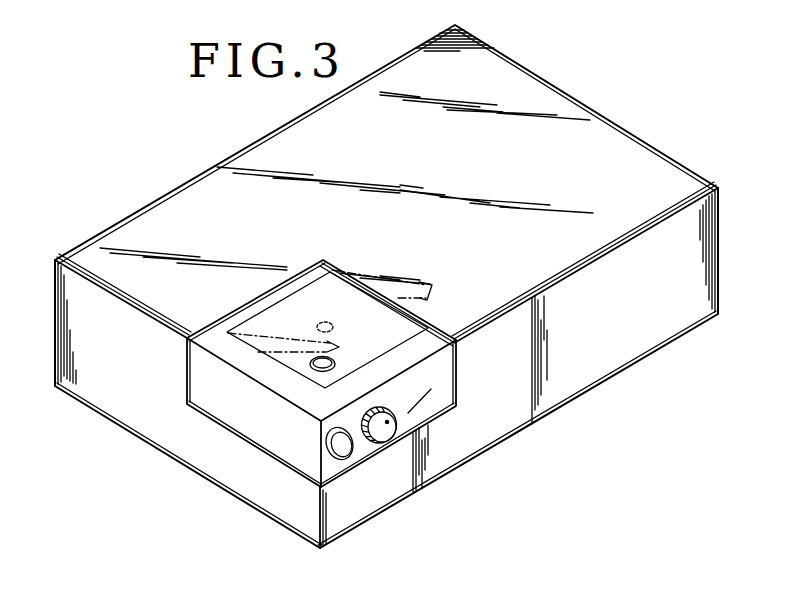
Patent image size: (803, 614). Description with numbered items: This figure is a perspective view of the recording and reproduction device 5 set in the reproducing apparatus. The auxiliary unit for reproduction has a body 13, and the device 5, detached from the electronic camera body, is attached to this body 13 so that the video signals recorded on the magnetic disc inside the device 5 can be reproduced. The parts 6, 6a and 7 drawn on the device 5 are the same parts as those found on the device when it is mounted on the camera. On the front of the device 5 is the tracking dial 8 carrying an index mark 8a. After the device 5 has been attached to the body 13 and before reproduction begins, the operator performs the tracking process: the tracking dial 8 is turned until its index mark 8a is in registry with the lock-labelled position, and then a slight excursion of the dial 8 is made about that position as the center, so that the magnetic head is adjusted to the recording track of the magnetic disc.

The device for recording and reproduction 5 is at (253, 428).
The part similar to that shown in FIG. 2 6 is at (265, 320).
The part similar to that shown in FIG. 2 6a is at (321, 325).
The part similar to that shown in FIG. 2 7 is at (340, 455).
The tracking dial 8 is at (368, 442).
The index mark 8a is at (388, 425).
The body of the auxiliary unit for reproduction 13 is at (517, 420).